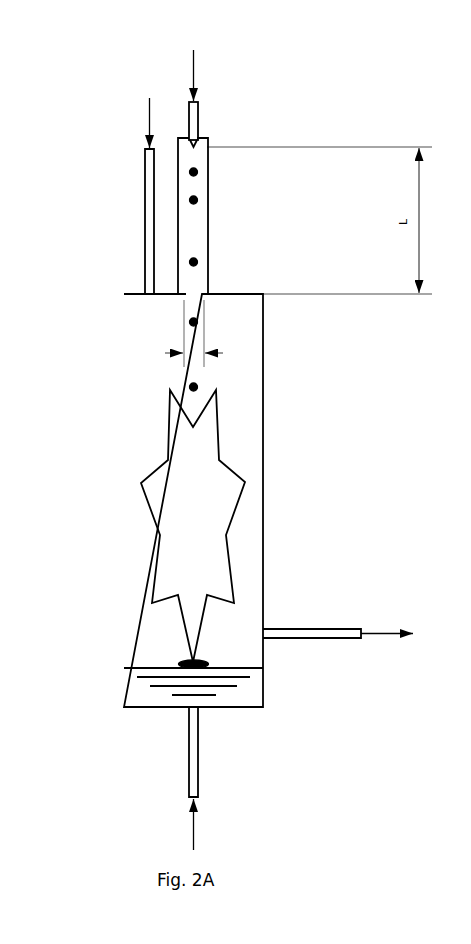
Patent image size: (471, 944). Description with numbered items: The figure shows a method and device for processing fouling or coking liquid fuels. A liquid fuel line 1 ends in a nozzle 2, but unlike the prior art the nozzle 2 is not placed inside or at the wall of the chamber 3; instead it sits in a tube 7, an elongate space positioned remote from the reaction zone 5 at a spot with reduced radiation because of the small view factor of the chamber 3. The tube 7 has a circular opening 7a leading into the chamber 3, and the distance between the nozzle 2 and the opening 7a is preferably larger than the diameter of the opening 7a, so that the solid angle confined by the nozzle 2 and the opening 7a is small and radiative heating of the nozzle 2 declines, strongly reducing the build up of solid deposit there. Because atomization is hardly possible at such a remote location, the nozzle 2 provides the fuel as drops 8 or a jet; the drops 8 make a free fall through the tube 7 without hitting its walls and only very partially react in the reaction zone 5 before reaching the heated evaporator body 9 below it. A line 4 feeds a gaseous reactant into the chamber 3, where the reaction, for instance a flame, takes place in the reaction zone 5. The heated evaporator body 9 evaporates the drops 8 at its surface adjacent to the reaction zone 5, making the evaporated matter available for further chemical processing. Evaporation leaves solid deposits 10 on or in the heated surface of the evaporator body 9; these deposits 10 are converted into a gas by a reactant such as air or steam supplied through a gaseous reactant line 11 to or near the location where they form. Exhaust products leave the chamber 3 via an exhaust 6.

The liquid fuel line 1 is at (200, 107).
The nozzle 2 is at (203, 138).
The chamber 3 is at (245, 435).
The line 4 is at (145, 195).
The reaction zone 5 is at (216, 506).
The exhaust 6 is at (303, 626).
The tube 7 is at (210, 205).
The circular opening 7a is at (188, 297).
The drops 8 is at (198, 320).
The heated evaporator body 9 is at (243, 687).
The solid deposits 10 is at (177, 662).
The gaseous reactant line 11 is at (198, 761).